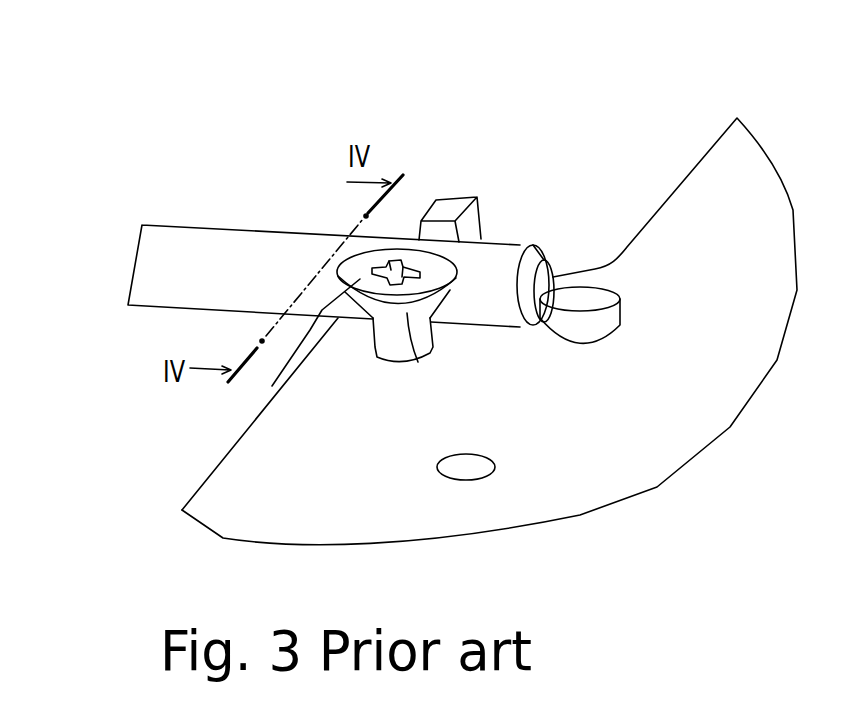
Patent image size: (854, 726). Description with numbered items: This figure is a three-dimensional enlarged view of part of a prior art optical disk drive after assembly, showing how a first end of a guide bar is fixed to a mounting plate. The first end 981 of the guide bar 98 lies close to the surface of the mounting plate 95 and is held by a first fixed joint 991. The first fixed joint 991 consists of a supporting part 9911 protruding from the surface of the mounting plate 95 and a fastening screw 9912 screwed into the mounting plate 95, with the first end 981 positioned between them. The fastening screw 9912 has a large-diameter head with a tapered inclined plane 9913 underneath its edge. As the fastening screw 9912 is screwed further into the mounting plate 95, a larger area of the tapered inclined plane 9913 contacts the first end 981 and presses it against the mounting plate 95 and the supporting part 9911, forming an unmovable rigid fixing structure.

The mounting plate 95 is at (183, 492).
The guide bar 98 is at (253, 181).
The first end 981 is at (493, 258).
The first fixed joint 991 is at (366, 226).
The supporting part 9911 is at (470, 206).
The fastening screw 9912 is at (272, 386).
The tapered inclined plane 9913 is at (410, 361).